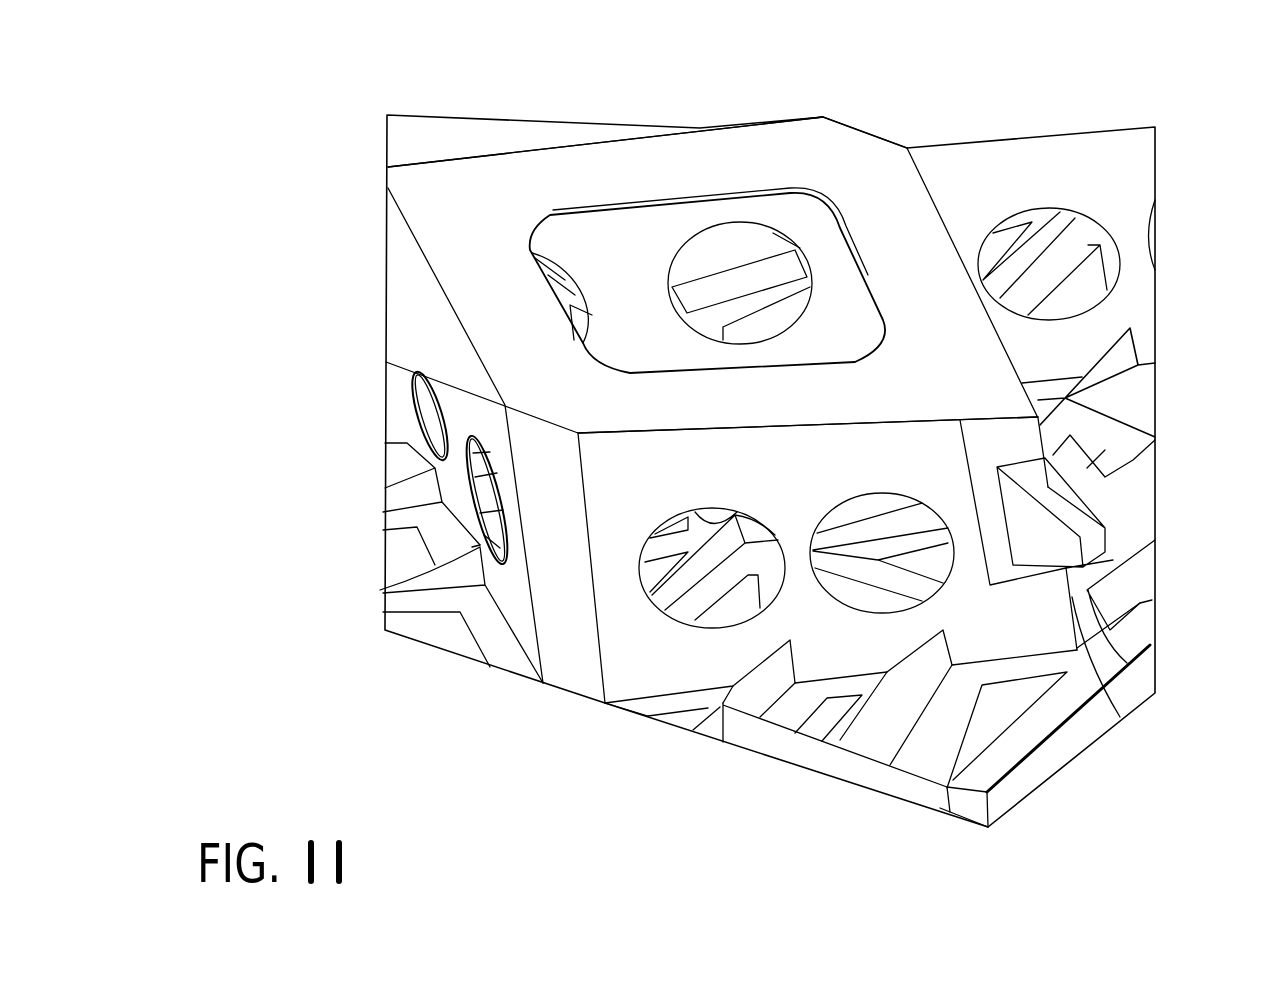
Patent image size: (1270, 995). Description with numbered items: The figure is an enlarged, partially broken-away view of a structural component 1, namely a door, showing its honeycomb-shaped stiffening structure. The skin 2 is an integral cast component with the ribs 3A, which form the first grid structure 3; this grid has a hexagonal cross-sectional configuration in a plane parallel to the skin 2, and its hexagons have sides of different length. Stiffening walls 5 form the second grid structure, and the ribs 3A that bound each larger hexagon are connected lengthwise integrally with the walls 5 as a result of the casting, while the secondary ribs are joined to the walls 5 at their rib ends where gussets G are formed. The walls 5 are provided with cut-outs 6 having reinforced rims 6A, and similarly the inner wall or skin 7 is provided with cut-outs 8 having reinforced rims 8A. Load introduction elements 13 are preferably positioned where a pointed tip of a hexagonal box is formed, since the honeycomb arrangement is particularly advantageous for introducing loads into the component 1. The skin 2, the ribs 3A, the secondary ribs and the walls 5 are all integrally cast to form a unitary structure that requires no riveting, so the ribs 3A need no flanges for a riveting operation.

The structural component 1 is at (1157, 110).
The inner wall or skin 7 is at (488, 130).
The cut-outs 8 is at (637, 283).
The reinforced rims 8A is at (562, 212).
The reinforced rims 6A is at (412, 388).
The cut-outs 6 is at (480, 484).
The walls 5 is at (623, 507).
The first grid structure 3 is at (737, 765).
The ribs 3A is at (800, 745).
The skin 2 is at (667, 723).
The load introduction elements 13 is at (1075, 518).
The gussets G is at (468, 573).